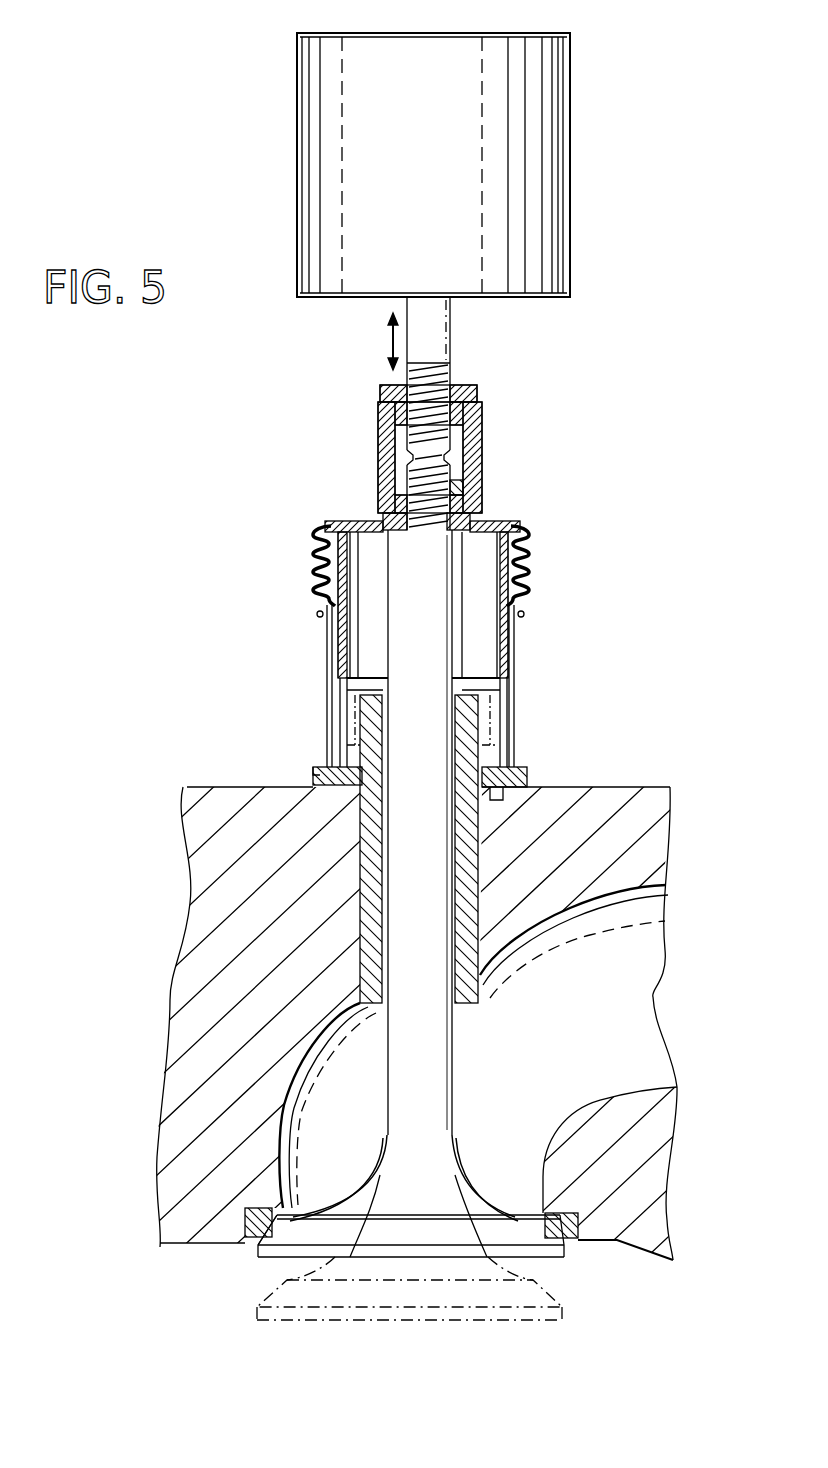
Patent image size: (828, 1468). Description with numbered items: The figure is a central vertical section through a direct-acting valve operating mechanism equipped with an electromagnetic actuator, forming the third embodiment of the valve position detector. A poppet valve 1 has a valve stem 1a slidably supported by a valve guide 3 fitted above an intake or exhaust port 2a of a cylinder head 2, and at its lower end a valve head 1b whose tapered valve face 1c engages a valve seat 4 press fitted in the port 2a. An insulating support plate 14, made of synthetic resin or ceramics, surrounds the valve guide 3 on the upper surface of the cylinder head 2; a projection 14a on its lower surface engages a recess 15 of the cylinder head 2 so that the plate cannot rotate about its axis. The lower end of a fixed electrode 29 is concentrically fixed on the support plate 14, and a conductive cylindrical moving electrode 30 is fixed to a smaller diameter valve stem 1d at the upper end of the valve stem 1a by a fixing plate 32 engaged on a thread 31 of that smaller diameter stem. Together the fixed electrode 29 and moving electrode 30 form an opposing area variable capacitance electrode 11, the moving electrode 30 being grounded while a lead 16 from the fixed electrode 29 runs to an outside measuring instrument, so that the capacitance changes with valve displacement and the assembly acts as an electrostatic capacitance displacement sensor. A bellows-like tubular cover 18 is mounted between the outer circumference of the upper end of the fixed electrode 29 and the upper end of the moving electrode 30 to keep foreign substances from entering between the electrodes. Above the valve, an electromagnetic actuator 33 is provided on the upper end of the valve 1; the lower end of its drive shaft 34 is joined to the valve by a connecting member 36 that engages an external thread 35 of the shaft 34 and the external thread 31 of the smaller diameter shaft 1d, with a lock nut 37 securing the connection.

The electromagnetic actuator 33 is at (571, 152).
The drive shaft 34 is at (452, 322).
The external thread 35 is at (432, 376).
The connecting member 36 is at (482, 415).
The lock nut 37 is at (380, 392).
The external thread 31 is at (445, 460).
The fixing plate 32 is at (385, 505).
The smaller diameter valve stem 1d is at (455, 492).
The bellows-like tubular cover 18 is at (312, 553).
The moving electrode 30 is at (332, 580).
The opposing area variable capacitance electrode 11 is at (312, 643).
The fixed electrode 29 is at (327, 703).
The lead 16 is at (313, 773).
The insulating support plate 14 is at (520, 772).
The projection 14a is at (505, 797).
The recess 15 is at (498, 797).
The valve guide 3 is at (468, 958).
The poppet valve 1 is at (465, 1036).
The valve stem 1a is at (454, 1097).
The valve head 1b is at (256, 1310).
The valve face 1c is at (258, 1242).
The valve seat 4 is at (245, 1226).
The cylinder head 2 is at (640, 1232).
The intake or exhaust port 2a is at (578, 1103).